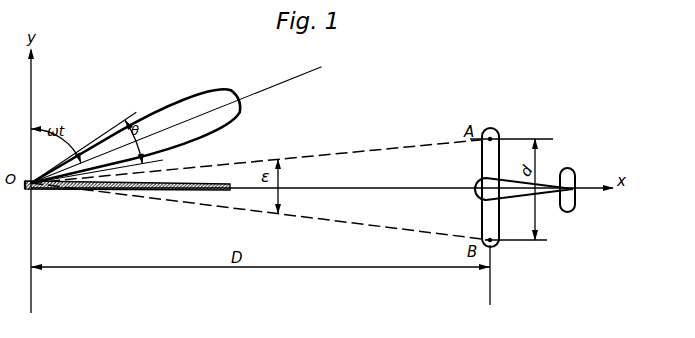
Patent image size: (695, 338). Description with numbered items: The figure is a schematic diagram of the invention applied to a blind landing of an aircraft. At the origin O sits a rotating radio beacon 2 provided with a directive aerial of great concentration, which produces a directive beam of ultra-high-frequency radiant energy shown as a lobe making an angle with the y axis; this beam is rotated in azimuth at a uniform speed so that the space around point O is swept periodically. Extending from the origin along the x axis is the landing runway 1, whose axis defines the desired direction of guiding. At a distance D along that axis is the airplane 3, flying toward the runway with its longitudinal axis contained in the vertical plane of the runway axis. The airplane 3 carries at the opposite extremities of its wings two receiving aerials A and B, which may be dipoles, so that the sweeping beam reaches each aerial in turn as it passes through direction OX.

The landing runway 1 is at (204, 191).
The rotating radio beacon 2 is at (31, 187).
The airplane 3 is at (495, 153).